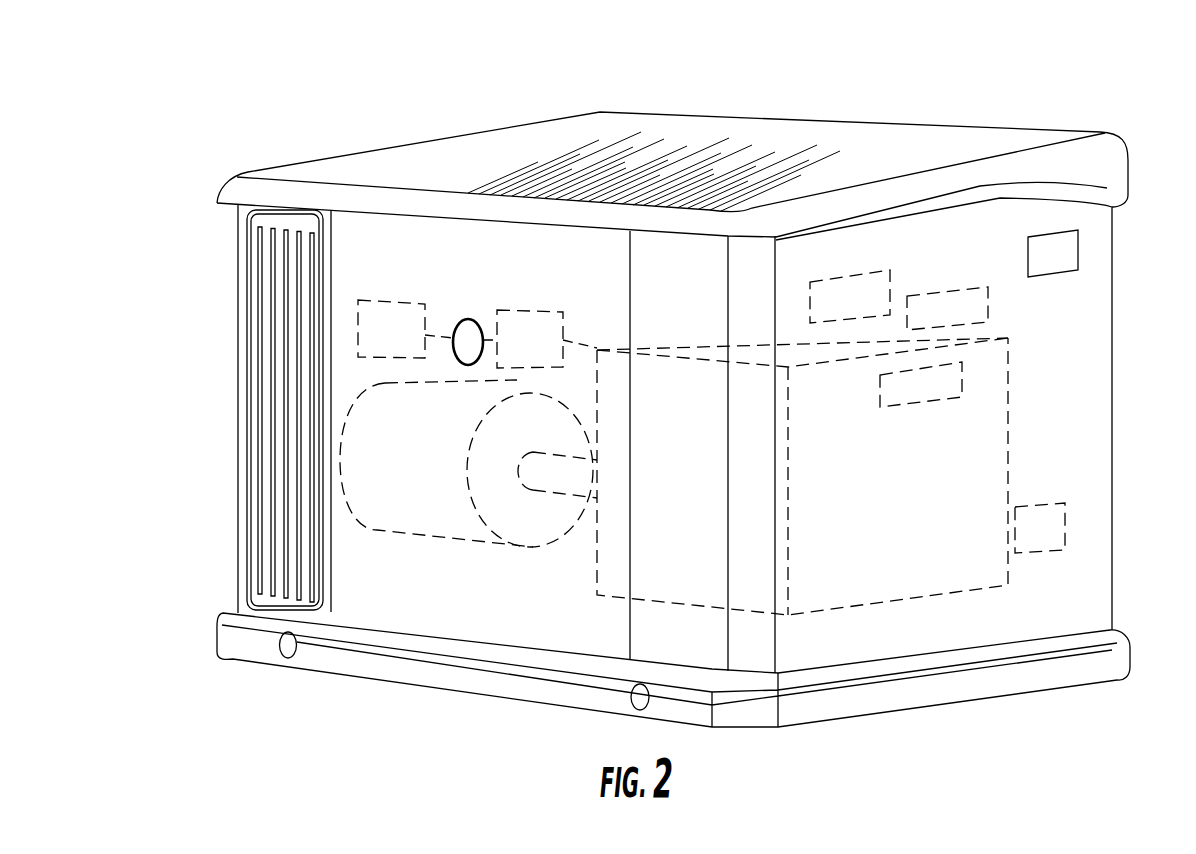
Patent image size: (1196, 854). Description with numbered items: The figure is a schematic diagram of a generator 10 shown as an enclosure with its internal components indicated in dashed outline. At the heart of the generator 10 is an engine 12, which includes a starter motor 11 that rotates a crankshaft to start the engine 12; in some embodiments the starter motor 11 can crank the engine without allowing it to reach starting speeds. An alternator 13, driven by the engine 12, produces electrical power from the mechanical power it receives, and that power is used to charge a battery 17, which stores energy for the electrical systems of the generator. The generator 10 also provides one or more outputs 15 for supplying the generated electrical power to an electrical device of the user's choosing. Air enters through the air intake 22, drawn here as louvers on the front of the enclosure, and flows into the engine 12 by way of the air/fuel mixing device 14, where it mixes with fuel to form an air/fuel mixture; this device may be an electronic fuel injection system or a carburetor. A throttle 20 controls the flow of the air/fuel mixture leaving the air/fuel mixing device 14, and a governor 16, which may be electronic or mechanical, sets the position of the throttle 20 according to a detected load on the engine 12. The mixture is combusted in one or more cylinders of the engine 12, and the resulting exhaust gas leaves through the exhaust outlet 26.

The generator 10 is at (960, 50).
The starter motor 11 is at (534, 335).
The engine 12 is at (993, 462).
The alternator 13 is at (372, 453).
The air/fuel mixing device 14 is at (848, 290).
The outputs 15 is at (1063, 250).
The governor 16 is at (950, 385).
The battery 17 is at (372, 330).
The throttle 20 is at (973, 308).
The air intake 22 is at (267, 418).
The exhaust outlet 26 is at (1048, 526).